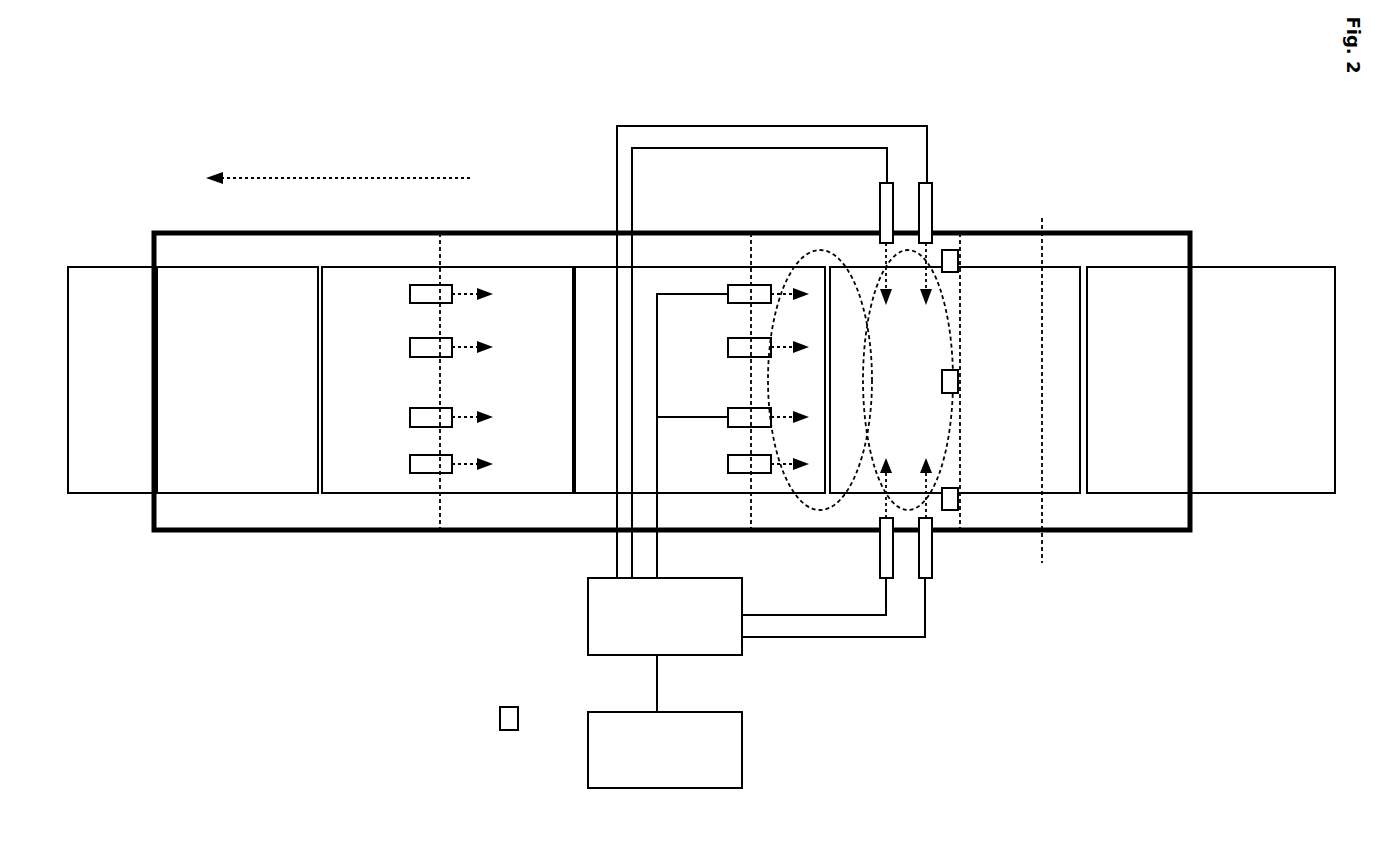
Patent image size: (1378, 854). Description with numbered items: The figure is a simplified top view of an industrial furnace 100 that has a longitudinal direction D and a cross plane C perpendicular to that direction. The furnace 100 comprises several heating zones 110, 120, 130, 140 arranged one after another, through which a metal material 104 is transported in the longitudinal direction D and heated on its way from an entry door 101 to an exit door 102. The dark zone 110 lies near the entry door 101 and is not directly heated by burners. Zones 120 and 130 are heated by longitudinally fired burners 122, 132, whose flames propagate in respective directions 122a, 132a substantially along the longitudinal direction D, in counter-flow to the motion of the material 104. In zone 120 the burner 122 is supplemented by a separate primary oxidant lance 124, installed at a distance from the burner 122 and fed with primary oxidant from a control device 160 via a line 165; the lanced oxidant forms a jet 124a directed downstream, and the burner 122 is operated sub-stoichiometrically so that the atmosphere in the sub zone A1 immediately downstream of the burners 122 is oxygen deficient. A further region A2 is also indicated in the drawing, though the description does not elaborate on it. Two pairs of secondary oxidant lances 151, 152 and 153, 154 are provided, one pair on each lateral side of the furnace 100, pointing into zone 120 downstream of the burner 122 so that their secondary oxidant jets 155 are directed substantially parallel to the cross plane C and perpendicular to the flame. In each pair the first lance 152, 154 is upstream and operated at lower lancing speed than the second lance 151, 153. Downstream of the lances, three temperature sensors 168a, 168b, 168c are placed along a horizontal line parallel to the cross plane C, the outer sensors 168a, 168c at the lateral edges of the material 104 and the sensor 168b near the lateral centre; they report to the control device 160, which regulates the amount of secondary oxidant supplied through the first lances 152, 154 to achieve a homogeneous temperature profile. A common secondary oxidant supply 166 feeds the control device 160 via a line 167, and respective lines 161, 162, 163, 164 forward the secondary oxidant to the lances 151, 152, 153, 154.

The industrial furnace 100 is at (1113, 193).
The entry door 101 is at (1211, 380).
The exit door 102 is at (193, 380).
The metal material 104 is at (348, 493).
The dark zone 110 is at (955, 381).
The heating zone 120 is at (700, 381).
The burner 122 is at (732, 398).
The flame propagation direction 122a is at (796, 395).
The primary oxidant lance 124 is at (714, 427).
The primary oxidant jet 124a is at (796, 347).
The heating zone 130 is at (447, 381).
The burner 132 is at (411, 374).
The flame propagation direction 132a is at (477, 379).
The heating zone 140 is at (237, 395).
The second secondary oxidant lance 151 is at (945, 549).
The first secondary oxidant lance 152 is at (868, 550).
The second secondary oxidant lance 153 is at (944, 213).
The first secondary oxidant lance 154 is at (867, 213).
The secondary oxidant jet 155 is at (906, 380).
The control device 160 is at (665, 616).
The line 161 is at (833, 621).
The line 162 is at (814, 596).
The line 163 is at (759, 363).
The line 164 is at (754, 352).
The line 165 is at (674, 554).
The secondary oxidant supply 166 is at (665, 750).
The line 167 is at (639, 683).
The temperature sensor 168a is at (950, 512).
The temperature sensor 168b is at (926, 384).
The temperature sensor 168c is at (952, 248).
The sub zone A1 is at (821, 252).
The second region A2 is at (947, 308).
The cross plane C is at (1032, 392).
The longitudinal direction D is at (338, 168).